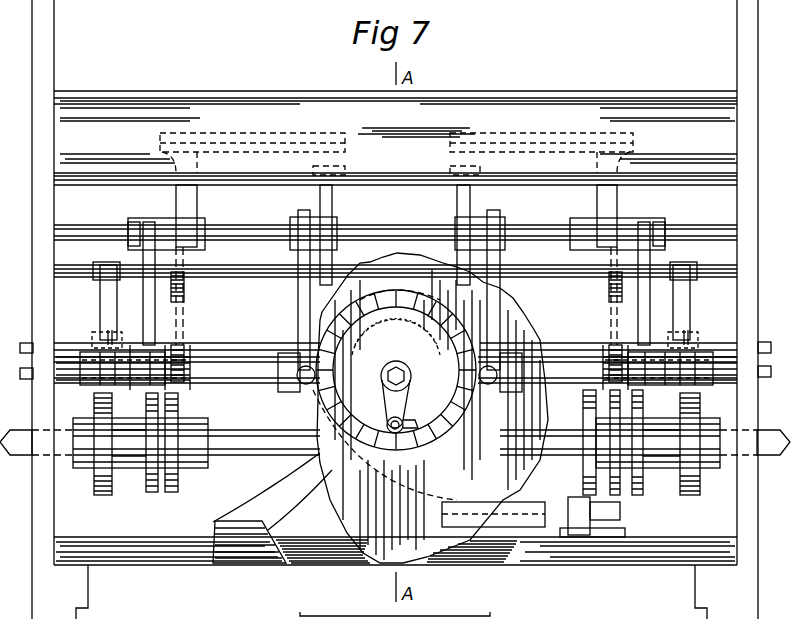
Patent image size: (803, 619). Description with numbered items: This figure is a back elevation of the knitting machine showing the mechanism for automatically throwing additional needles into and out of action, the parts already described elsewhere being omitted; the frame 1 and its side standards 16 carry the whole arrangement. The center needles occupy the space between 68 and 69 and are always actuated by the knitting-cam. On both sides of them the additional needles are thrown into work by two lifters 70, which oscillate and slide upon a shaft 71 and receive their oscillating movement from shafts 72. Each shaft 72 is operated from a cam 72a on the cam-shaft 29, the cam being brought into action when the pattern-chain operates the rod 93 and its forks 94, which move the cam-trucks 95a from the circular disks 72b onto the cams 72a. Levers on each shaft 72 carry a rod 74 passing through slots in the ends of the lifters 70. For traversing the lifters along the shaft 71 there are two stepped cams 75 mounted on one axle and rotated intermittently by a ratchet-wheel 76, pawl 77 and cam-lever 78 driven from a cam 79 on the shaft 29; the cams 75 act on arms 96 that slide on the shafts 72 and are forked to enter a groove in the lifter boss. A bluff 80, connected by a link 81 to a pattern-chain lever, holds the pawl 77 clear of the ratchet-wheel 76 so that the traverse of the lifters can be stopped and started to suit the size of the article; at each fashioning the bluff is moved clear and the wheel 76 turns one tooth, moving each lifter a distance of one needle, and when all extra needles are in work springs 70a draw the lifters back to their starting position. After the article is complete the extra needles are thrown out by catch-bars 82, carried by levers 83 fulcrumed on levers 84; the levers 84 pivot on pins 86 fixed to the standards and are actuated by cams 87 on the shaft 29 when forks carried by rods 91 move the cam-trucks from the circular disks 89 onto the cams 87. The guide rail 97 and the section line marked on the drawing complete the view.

The frame 1 is at (395, 355).
The frame side post 16 is at (395, 309).
The cam-shaft 29 is at (395, 442).
The center needle space boundary 68 is at (410, 116).
The center needle space boundary 69 is at (510, 116).
The lifter 70 is at (395, 235).
The spring 70a is at (396, 370).
The shaft 71 is at (395, 228).
The shaft 72 is at (395, 372).
The cam 72a is at (378, 454).
The circular disk 72b is at (402, 473).
The rod 74 is at (395, 279).
The stepped cam 75 is at (386, 396).
The ratchet-wheel 76 is at (430, 408).
The pawl 77 is at (478, 409).
The cam-lever 78 is at (549, 502).
The cam 79 is at (588, 394).
The bluff 80 is at (405, 389).
The link 81 is at (412, 421).
The catch-bar 82 is at (396, 145).
The lever 83 is at (394, 283).
The lever 84 is at (135, 249).
The pin or axle 86 is at (396, 365).
The cam 87 is at (397, 447).
The circular disk 89 is at (413, 452).
The rod 91 is at (25, 343).
The rod 93 is at (396, 371).
The fork 94 is at (400, 325).
The cam-truck 95a is at (408, 320).
The arm 96 is at (391, 280).
The guide rail 97 is at (424, 337).